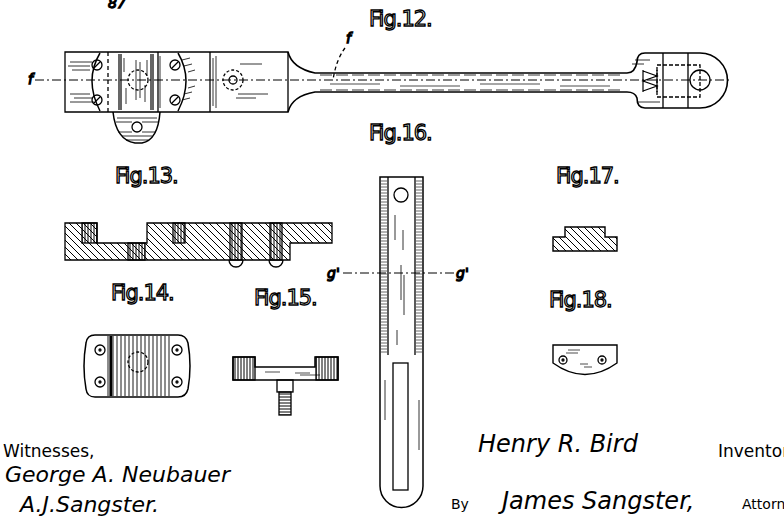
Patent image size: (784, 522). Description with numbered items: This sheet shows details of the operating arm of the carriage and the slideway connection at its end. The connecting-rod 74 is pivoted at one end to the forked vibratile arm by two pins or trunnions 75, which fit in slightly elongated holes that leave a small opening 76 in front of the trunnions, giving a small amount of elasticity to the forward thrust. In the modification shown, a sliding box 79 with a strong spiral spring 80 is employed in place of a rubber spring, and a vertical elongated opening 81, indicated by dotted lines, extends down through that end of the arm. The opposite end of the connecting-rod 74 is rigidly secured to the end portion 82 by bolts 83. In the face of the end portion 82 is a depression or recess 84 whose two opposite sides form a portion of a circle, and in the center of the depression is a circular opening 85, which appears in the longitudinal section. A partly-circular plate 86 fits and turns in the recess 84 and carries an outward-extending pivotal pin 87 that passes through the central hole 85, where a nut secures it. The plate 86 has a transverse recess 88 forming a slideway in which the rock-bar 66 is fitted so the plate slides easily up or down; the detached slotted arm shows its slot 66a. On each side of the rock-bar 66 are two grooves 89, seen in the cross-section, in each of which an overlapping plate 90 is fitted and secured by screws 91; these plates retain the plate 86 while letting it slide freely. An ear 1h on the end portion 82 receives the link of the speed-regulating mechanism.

In FIG. 12, the ear 1h is at (118, 128).
In FIG. 16, the rock-bar 66 is at (383, 398).
In FIG. 17, the rock-bar 66 is at (572, 252).
In FIG. 16, the slot in slide bar 66a is at (400, 405).
In FIG. 12, the connecting-rod 74 is at (433, 73).
In FIG. 12, the pins or trunnions 75 is at (684, 0).
In FIG. 12, the small opening 76 is at (718, 0).
In FIG. 12, the sliding box 79 is at (672, 78).
In FIG. 12, the spiral spring 80 is at (648, 85).
In FIG. 12, the vertical elongated opening 81 is at (674, 105).
In FIG. 12, the end portion 82 is at (207, 52).
In FIG. 13, the end portion 82 is at (226, 262).
In FIG. 13, the bolts 83 is at (284, 262).
In FIG. 13, the depression or recess 84 is at (155, 236).
In FIG. 12, the circular opening 85 is at (161, 65).
In FIG. 13, the circular opening 85 is at (140, 243).
In FIG. 14, the circular opening 85 is at (147, 377).
In FIG. 14, the partly-circular plate 86 is at (87, 370).
In FIG. 15, the partly-circular plate 86 is at (236, 365).
In FIG. 15, the pivotal pin 87 is at (278, 387).
In FIG. 12, the transverse recess 88 is at (138, 68).
In FIG. 14, the transverse recess 88 is at (142, 347).
In FIG. 15, the transverse recess 88 is at (280, 366).
In FIG. 16, the grooves 89 is at (384, 226).
In FIG. 17, the grooves 89 is at (563, 233).
In FIG. 12, the overlapping plate 90 is at (92, 76).
In FIG. 18, the overlapping plate 90 is at (580, 352).
In FIG. 12, the screws 91 is at (95, 61).